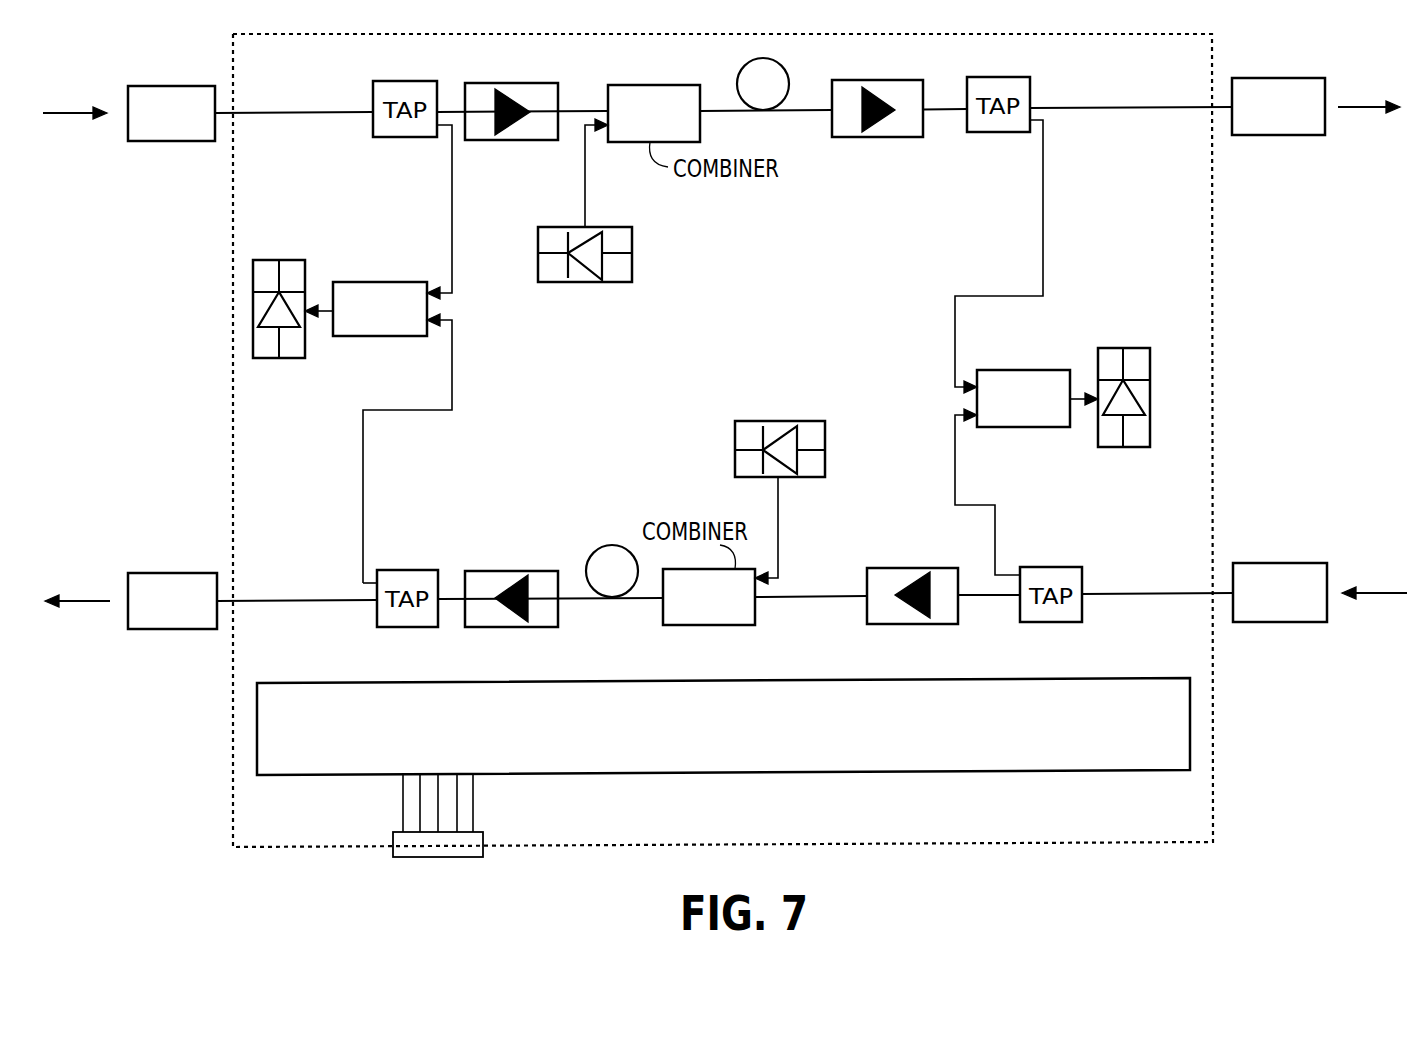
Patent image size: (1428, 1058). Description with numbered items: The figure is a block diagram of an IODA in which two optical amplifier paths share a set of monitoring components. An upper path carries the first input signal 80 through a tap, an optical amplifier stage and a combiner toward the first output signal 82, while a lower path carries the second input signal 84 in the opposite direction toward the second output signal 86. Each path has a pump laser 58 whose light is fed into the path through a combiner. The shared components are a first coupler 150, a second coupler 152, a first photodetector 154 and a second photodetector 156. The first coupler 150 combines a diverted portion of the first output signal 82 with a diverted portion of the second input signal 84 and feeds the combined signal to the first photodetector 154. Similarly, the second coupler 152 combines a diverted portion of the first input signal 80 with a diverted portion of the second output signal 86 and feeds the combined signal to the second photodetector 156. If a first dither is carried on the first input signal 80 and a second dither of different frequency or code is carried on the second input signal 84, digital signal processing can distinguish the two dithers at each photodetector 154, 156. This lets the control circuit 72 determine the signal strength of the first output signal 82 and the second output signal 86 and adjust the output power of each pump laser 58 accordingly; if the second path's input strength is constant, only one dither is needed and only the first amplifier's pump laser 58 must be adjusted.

The first input signal 80 is at (88, 112).
The first output signal 82 is at (1373, 107).
The second input signal 84 is at (1374, 593).
The second output signal 86 is at (87, 601).
The pump laser 58 is at (632, 276).
The first coupler 150 is at (1012, 427).
The second coupler 152 is at (403, 281).
The first photodetector 154 is at (1132, 447).
The second photodetector 156 is at (270, 358).
The control circuit 72 is at (745, 775).